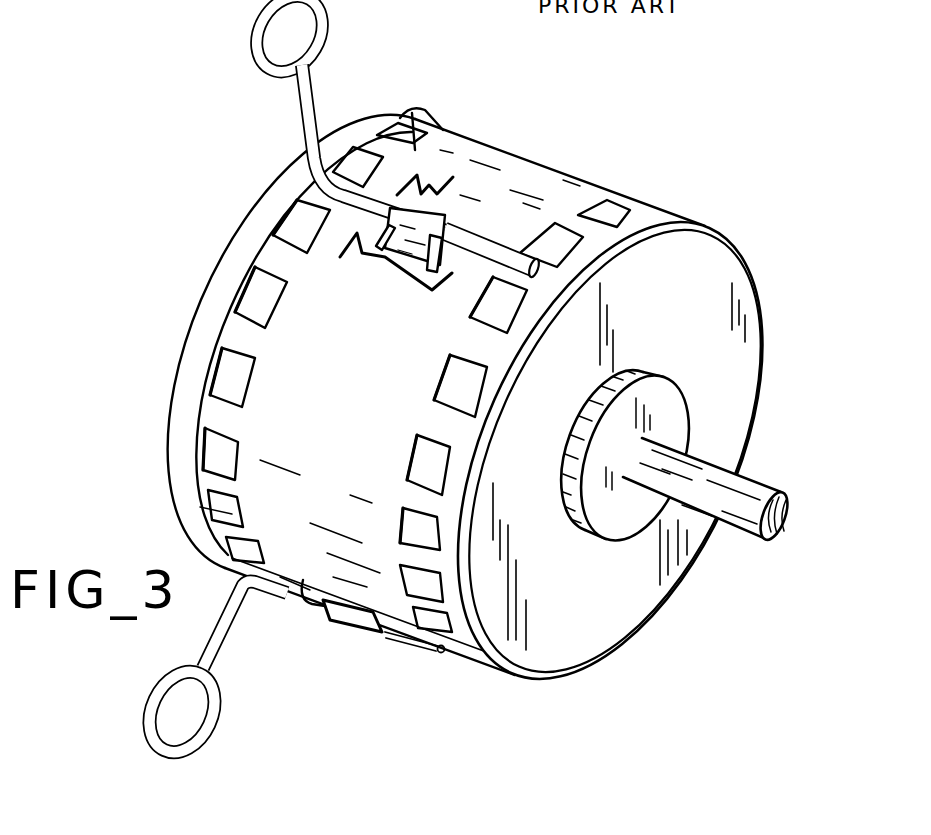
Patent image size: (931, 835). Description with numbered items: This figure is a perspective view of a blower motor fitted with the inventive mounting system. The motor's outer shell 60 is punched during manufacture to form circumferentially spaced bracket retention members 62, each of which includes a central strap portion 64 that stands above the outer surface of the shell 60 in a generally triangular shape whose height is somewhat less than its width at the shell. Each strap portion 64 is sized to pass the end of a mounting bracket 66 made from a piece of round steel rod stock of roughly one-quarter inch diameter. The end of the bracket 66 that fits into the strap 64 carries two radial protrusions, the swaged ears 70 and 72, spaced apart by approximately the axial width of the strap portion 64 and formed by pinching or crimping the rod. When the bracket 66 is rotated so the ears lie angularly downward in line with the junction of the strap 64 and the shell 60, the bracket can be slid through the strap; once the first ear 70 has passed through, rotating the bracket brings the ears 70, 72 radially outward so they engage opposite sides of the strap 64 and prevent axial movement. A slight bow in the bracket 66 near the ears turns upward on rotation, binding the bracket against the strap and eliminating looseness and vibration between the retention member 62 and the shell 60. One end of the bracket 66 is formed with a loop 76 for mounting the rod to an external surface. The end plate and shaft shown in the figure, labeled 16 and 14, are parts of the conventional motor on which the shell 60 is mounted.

The shaft 14 is at (741, 518).
The end plate 16 is at (656, 320).
The outer shell 60 is at (492, 162).
The bracket retention member 62 is at (403, 243).
The strap portion 64 is at (445, 212).
The mounting bracket 66 is at (300, 141).
The swaged ear 70 is at (462, 228).
The swaged ear 72 is at (443, 130).
The loop 76 is at (252, 63).